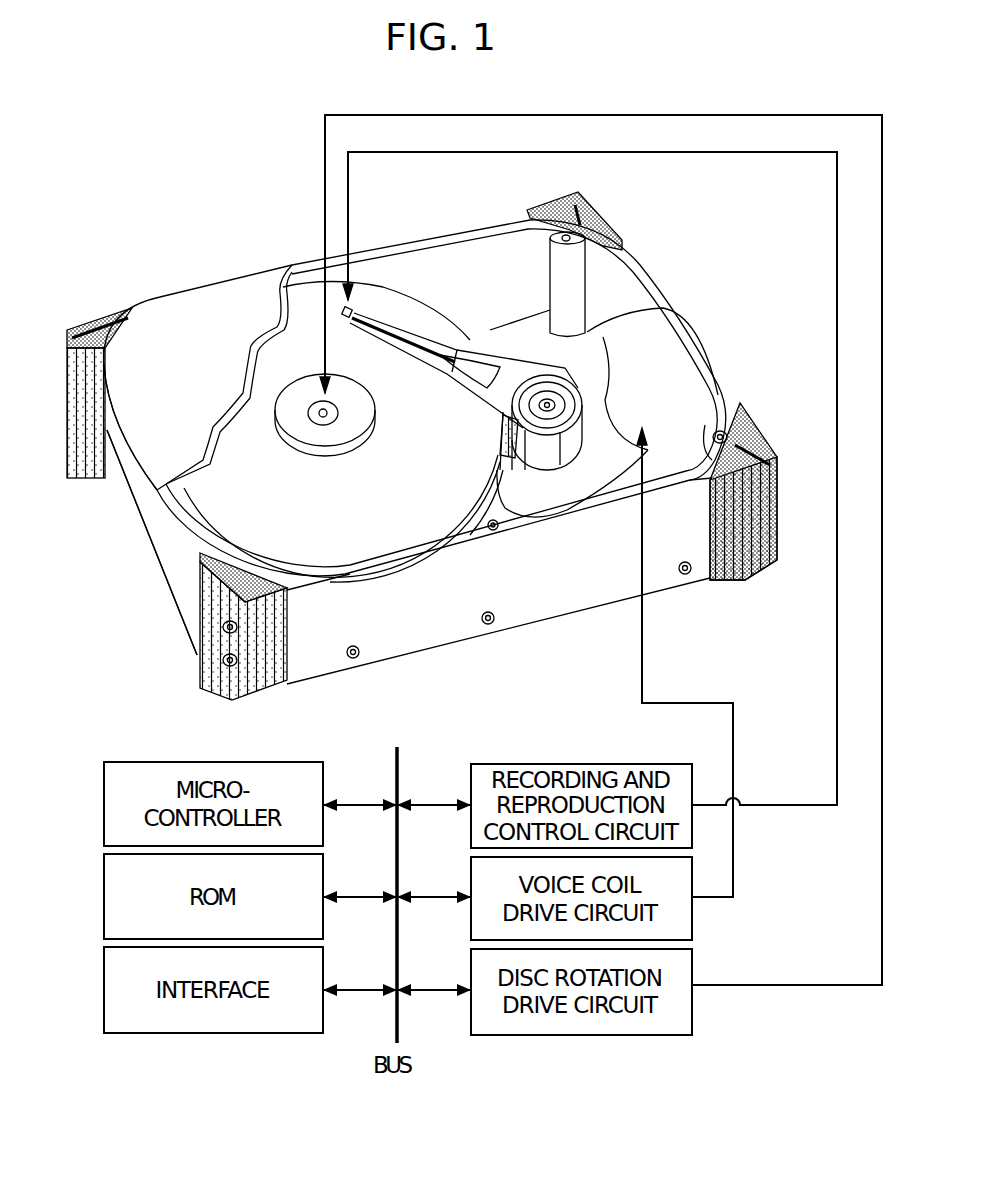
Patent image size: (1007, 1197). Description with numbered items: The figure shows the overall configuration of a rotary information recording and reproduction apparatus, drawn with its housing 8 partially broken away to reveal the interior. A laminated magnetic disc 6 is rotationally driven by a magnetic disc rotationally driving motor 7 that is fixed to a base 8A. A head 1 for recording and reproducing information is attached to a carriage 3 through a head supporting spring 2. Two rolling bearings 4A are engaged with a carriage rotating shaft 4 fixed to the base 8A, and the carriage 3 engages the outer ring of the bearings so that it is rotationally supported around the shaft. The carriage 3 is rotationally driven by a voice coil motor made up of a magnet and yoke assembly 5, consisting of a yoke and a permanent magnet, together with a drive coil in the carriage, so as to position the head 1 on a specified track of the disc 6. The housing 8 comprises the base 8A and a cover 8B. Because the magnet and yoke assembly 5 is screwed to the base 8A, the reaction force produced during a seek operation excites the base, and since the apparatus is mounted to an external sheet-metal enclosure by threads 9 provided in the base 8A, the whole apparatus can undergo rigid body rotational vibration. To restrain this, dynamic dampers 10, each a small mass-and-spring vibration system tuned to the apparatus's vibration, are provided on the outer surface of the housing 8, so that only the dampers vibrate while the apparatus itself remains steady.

The head 1 is at (348, 320).
The head supporting spring 2 is at (378, 320).
The carriage 3 is at (448, 372).
The carriage rotating shaft 4 is at (562, 408).
The rolling bearings 4A is at (552, 437).
The magnet and yoke assembly 5 is at (668, 362).
The laminated magnetic disc 6 is at (373, 530).
The magnetic disc rotationally driving motor 7 is at (337, 413).
The housing 8 is at (102, 510).
The base 8A is at (150, 452).
The cover 8B is at (143, 527).
The threads 9 is at (358, 658).
The dynamic dampers 10 is at (72, 322).